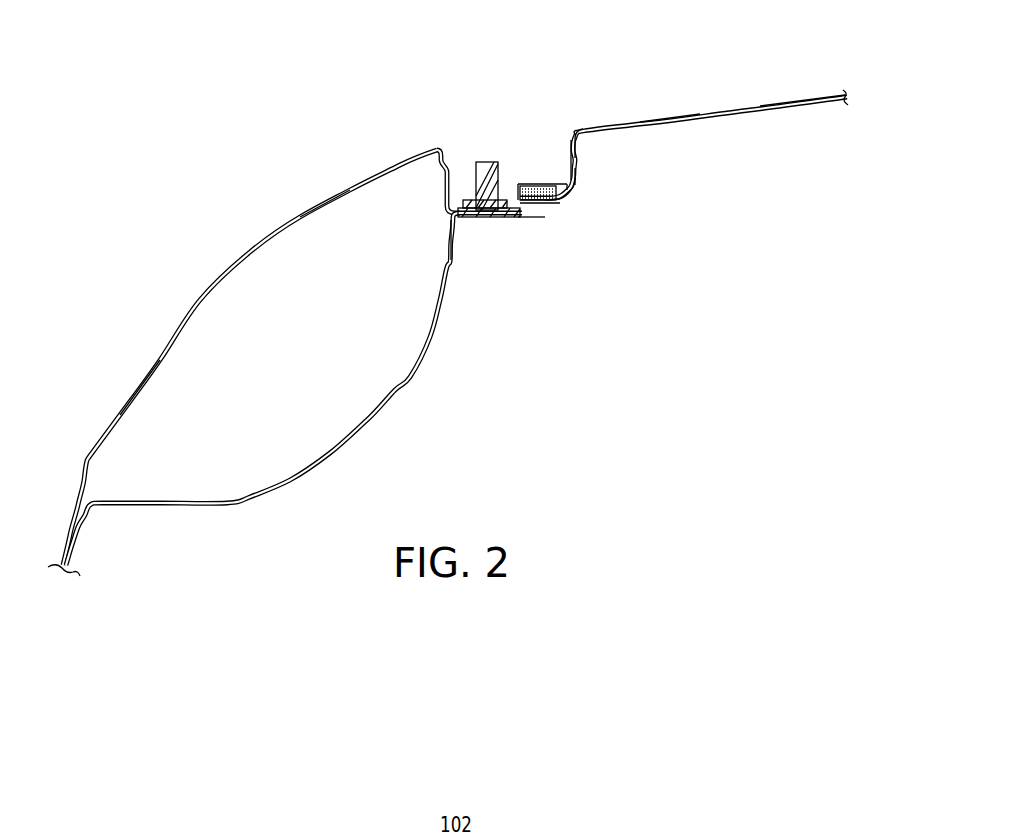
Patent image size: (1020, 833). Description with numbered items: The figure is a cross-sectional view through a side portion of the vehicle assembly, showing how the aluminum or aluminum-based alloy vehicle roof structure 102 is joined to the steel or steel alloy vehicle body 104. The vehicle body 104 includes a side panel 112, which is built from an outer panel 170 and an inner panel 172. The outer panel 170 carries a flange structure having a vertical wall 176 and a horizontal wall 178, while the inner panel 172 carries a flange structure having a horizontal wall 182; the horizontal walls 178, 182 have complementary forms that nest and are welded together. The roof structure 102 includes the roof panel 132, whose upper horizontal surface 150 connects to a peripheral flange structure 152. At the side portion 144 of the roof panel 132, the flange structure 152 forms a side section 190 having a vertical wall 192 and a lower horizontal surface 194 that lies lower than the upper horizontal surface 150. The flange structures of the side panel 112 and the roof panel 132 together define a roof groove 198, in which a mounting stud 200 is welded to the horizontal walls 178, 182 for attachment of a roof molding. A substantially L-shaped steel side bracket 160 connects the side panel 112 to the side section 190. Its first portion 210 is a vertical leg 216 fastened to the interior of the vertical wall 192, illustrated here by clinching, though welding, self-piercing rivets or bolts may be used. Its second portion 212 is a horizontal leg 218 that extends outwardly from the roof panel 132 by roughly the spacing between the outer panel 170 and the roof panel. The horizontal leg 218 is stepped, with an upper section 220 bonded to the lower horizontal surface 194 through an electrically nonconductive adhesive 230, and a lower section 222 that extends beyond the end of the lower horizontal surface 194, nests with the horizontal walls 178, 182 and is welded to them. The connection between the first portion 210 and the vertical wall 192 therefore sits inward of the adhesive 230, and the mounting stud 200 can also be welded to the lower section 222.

The vehicle roof structure 102 is at (685, 52).
The vehicle body 104 is at (108, 353).
The side panel 112 is at (237, 132).
The roof panel 132 is at (788, 93).
The side portion 144 is at (590, 130).
The upper horizontal surface 150 is at (705, 112).
The flange structure 152 is at (605, 148).
The side bracket 160 is at (587, 209).
The outer panel 170 is at (231, 270).
The inner panel 172 is at (275, 492).
The vertical wall 176 is at (443, 168).
The horizontal wall 178 is at (452, 210).
The horizontal wall 182 is at (473, 221).
The side section 190 is at (543, 115).
The vertical wall 192 is at (565, 138).
The lower horizontal surface 194 is at (530, 182).
The roof groove 198 is at (507, 185).
The mounting stud 200 is at (490, 183).
The first portion 210 is at (605, 178).
The second portion 212 is at (531, 230).
The vertical leg 216 is at (581, 186).
The horizontal leg 218 is at (548, 207).
The upper section 220 is at (563, 210).
The lower section 222 is at (507, 217).
The electrically nonconductive adhesive 230 is at (533, 187).